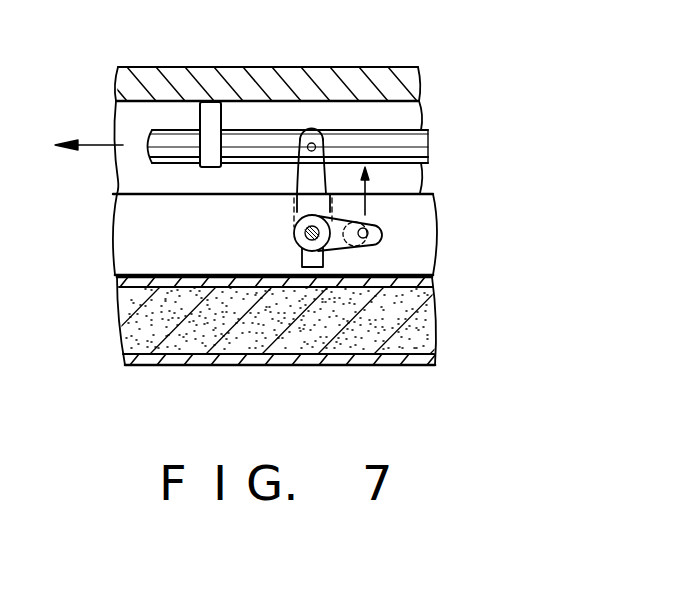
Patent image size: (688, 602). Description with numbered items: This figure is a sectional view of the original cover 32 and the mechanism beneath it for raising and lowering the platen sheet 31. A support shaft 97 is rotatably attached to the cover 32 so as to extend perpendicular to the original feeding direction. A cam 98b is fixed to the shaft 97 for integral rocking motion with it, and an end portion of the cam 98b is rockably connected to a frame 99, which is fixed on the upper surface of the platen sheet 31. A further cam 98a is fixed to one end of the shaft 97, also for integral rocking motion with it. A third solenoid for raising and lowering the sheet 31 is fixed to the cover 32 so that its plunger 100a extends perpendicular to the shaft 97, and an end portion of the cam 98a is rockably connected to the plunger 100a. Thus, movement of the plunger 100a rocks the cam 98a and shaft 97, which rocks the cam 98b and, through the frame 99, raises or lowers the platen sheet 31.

The cover 32 is at (396, 66).
The plunger 100a is at (428, 132).
The frame 99 is at (420, 208).
The cam 98a is at (297, 170).
The support shaft 97 is at (294, 234).
The cam 98b is at (345, 247).
The platen sheet 31 is at (436, 327).